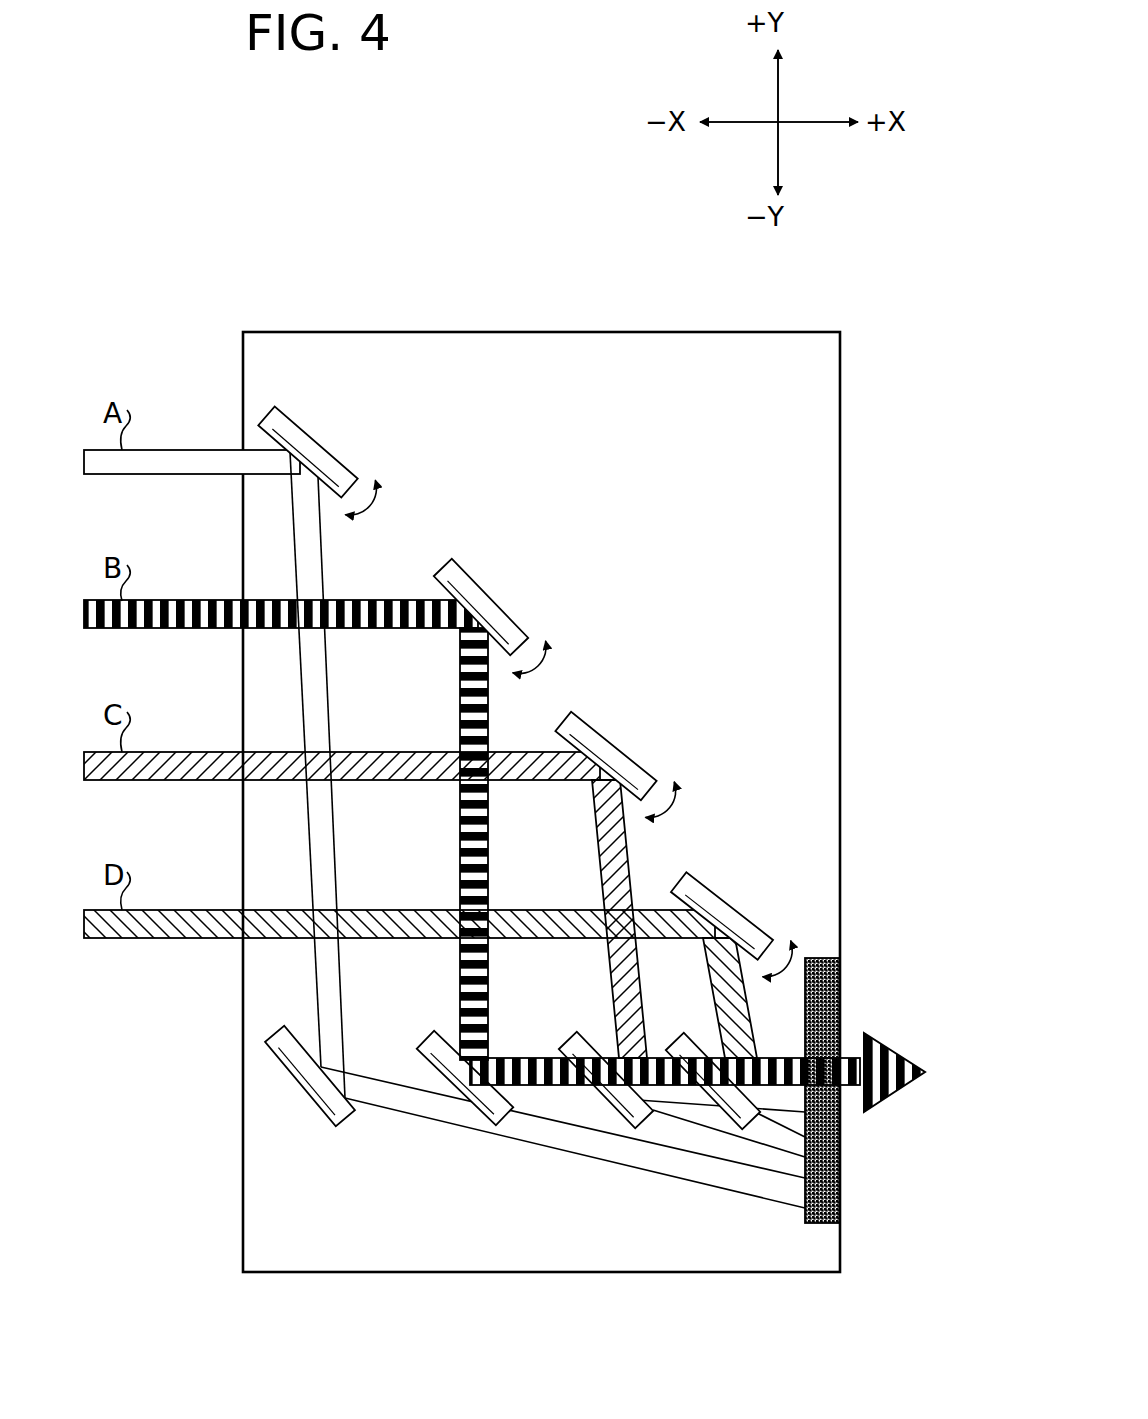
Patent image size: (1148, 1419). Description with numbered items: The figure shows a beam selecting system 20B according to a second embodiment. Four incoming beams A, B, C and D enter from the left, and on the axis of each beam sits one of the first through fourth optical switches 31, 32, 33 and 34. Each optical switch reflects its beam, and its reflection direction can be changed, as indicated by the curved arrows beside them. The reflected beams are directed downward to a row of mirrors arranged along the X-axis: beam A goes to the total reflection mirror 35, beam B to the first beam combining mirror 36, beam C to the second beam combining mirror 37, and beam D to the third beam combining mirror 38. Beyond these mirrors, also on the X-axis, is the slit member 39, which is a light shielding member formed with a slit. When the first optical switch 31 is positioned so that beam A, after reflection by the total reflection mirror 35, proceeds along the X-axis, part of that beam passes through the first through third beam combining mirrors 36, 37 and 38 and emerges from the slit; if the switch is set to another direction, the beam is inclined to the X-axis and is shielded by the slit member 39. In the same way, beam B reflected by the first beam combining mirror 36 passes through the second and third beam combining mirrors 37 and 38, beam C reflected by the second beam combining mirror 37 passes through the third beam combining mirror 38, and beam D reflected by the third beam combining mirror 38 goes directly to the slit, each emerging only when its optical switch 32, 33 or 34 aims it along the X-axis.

The beam selecting system 20B is at (493, 280).
The first optical switch 31 is at (317, 447).
The second optical switch 32 is at (478, 592).
The third optical switch 33 is at (612, 758).
The fourth optical switch 34 is at (722, 910).
The total reflection mirror 35 is at (322, 1097).
The first beam combining mirror 36 is at (462, 1098).
The second beam combining mirror 37 is at (615, 1107).
The third beam combining mirror 38 is at (719, 1132).
The slit member 39 is at (803, 1222).